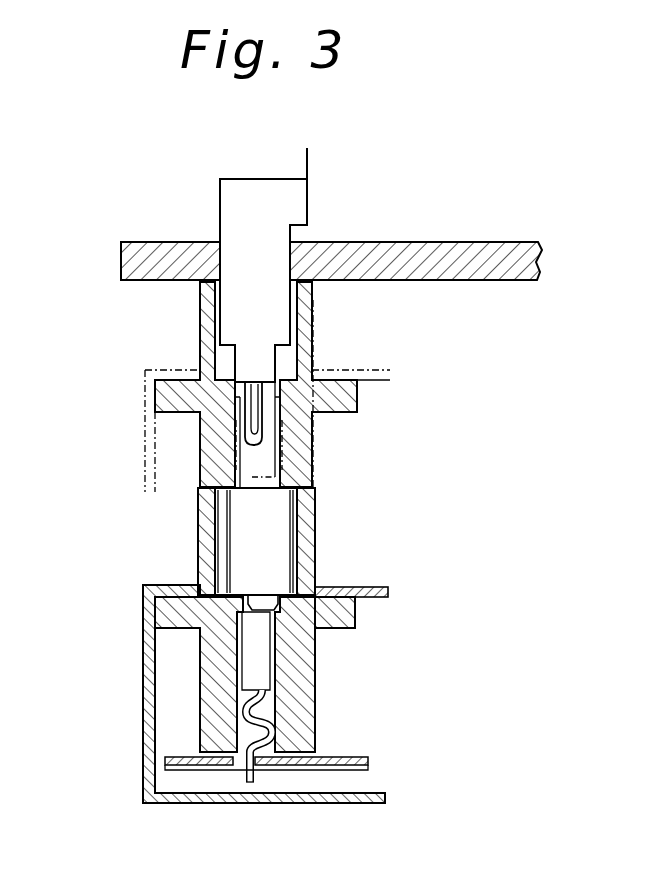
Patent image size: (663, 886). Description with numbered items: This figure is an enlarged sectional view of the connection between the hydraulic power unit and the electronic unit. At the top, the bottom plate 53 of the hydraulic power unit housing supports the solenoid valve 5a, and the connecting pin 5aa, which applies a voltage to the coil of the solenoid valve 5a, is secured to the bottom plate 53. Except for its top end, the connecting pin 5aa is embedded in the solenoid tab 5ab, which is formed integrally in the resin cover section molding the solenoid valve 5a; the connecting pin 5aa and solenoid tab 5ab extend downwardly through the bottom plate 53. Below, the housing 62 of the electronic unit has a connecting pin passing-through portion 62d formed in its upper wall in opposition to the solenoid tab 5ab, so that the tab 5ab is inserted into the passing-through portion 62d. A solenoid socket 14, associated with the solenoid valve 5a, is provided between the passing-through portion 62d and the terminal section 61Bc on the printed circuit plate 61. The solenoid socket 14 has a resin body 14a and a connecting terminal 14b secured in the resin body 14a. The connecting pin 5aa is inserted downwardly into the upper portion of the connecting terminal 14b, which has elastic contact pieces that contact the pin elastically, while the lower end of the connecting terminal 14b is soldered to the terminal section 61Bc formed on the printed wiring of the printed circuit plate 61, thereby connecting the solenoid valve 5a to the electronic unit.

The solenoid valve 5a is at (343, 150).
The solenoid tab 5ab is at (220, 217).
The connecting pin 5aa is at (262, 407).
The bottom plate 53 is at (490, 280).
The solenoid socket 14 is at (186, 445).
The resin body 14a is at (318, 645).
The connecting terminal 14b is at (262, 666).
The housing 62 is at (366, 587).
The connecting pin passing-through portion 62d is at (316, 582).
The printed circuit plate 61 is at (334, 758).
The terminal section 61Bc is at (277, 787).